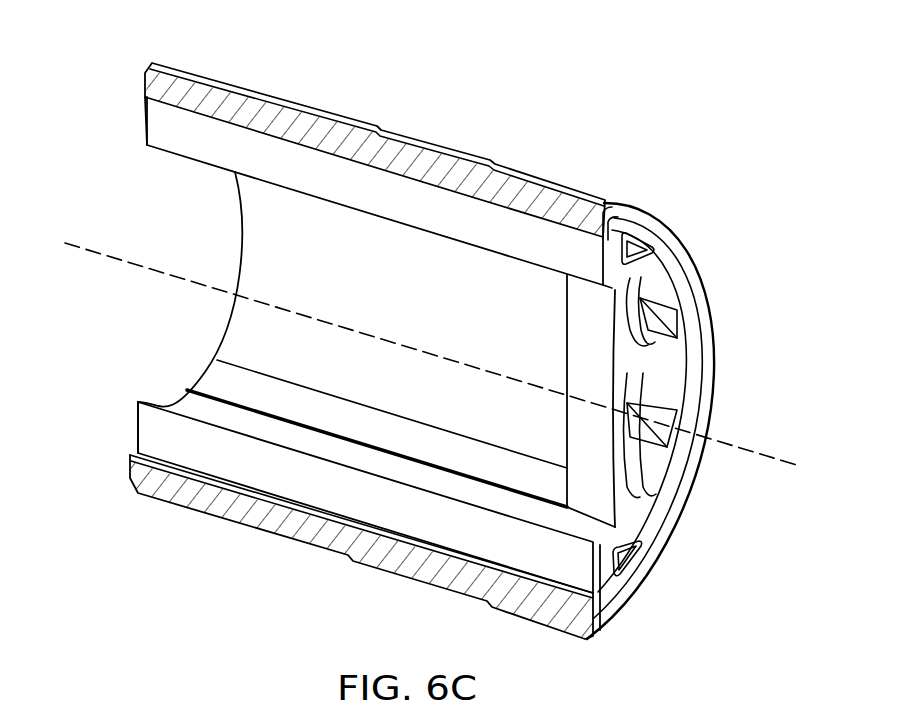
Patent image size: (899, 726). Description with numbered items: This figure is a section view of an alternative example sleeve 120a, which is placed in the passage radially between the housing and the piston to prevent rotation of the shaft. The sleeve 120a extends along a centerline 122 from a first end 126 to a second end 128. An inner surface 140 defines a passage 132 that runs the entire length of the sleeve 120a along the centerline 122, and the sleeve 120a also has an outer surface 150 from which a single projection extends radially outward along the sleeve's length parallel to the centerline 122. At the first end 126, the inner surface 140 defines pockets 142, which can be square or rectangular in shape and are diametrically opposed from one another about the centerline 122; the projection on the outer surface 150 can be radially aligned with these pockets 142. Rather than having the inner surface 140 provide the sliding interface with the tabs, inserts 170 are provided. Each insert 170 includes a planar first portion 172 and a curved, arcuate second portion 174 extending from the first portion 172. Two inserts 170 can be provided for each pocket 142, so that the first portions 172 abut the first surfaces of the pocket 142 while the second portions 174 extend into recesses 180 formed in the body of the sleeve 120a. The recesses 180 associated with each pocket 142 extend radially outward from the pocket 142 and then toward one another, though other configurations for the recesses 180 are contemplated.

The sleeve 120a is at (276, 75).
The centerline 122 is at (752, 460).
The first end 126 is at (682, 201).
The second end 128 is at (184, 50).
The passage 132 is at (264, 245).
The inner surface 140 is at (377, 389).
The pockets 142 is at (636, 290).
The outer surface 150 is at (343, 114).
The inserts 170 is at (130, 113).
The planar first portion 172 is at (584, 272).
The curved second portion 174 is at (506, 182).
The recesses 180 is at (572, 203).